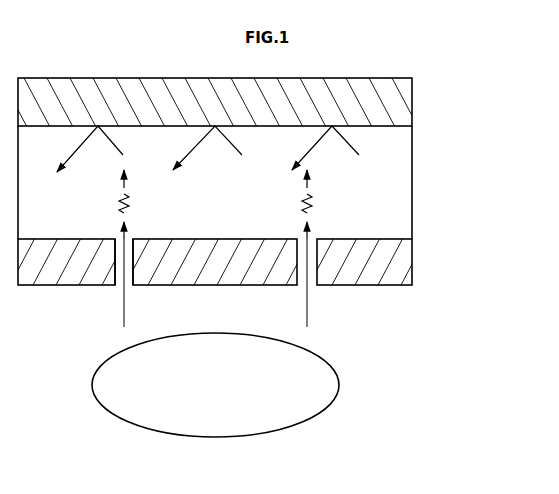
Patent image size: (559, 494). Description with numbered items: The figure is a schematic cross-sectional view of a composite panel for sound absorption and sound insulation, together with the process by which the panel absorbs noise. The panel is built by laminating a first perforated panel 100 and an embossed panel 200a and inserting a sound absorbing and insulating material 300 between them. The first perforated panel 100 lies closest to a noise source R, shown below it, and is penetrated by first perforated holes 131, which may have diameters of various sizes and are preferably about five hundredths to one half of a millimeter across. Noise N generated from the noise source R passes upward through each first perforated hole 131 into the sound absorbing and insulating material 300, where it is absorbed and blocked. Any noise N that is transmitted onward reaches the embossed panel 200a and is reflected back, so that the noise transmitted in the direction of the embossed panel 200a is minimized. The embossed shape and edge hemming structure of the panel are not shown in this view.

The embossed panel 200a is at (412, 102).
The sound absorbing and insulating material 300 is at (412, 186).
The first perforated panel 100 is at (412, 260).
The first perforated hole 131 is at (117, 268).
The noise N is at (309, 307).
The noise source R is at (340, 385).